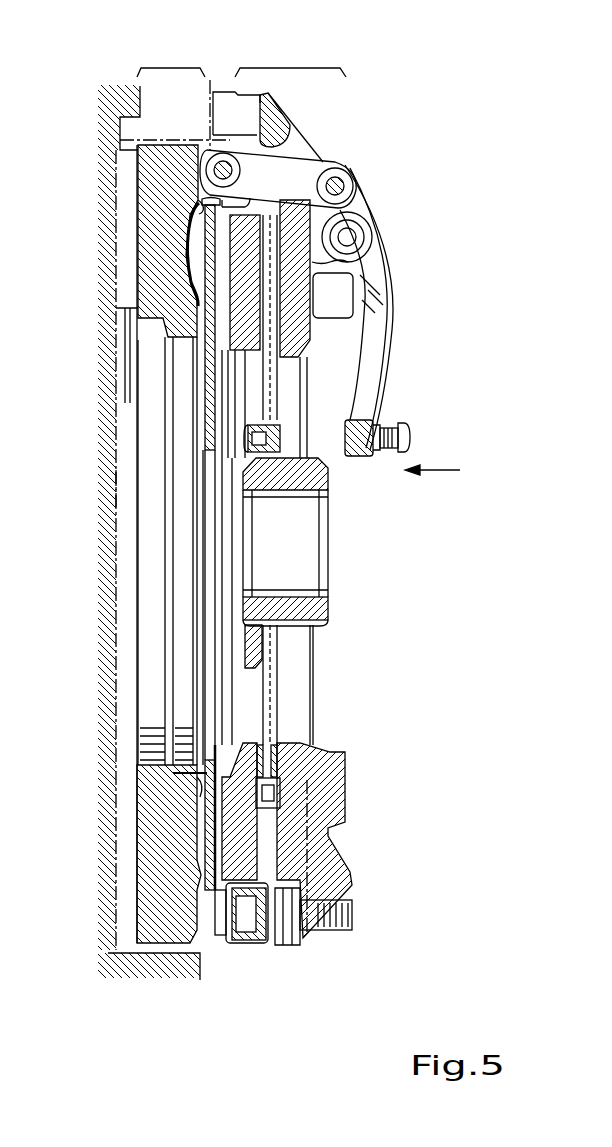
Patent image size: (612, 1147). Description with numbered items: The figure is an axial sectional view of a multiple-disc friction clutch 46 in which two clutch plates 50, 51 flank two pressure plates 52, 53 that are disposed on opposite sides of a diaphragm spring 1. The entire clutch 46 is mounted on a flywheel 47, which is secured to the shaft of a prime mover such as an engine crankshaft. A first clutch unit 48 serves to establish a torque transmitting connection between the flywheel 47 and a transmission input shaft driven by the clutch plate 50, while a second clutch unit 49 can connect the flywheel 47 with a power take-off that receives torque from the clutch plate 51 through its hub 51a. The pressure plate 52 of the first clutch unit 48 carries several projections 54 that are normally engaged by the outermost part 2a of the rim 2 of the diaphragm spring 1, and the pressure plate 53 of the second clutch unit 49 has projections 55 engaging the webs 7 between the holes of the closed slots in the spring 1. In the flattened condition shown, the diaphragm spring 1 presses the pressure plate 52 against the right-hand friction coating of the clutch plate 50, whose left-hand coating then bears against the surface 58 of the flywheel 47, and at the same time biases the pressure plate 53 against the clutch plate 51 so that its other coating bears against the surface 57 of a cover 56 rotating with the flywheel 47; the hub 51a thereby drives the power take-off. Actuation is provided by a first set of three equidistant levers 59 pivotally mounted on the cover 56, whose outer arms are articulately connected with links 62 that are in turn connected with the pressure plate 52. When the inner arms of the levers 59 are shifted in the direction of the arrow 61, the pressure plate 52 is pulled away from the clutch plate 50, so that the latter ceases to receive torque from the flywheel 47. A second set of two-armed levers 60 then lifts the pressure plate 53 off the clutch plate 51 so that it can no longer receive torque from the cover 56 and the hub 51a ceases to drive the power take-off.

The friction clutch 46 is at (233, 30).
The flywheel 47 is at (130, 111).
The first clutch unit 48 is at (164, 67).
The second clutch unit 49 is at (287, 67).
The clutch plate 50 is at (122, 190).
The cover 56 is at (222, 113).
The links 62 is at (300, 167).
The projections 54 is at (196, 213).
The outermost part of the rim 2a is at (227, 201).
The pressure plate 52 is at (160, 270).
The rim 2 is at (210, 272).
The right-hand surface of the flywheel 58 is at (112, 491).
The levers 59 is at (358, 428).
The arrow 61 is at (447, 471).
The hub 51a is at (324, 606).
The diaphragm spring 1 is at (198, 747).
The pressure plate 53 is at (250, 748).
The clutch plate 51 is at (268, 762).
The surface of the cover 57 is at (280, 772).
The projections 55 is at (213, 795).
The webs 7 is at (200, 776).
The levers 60 is at (247, 945).